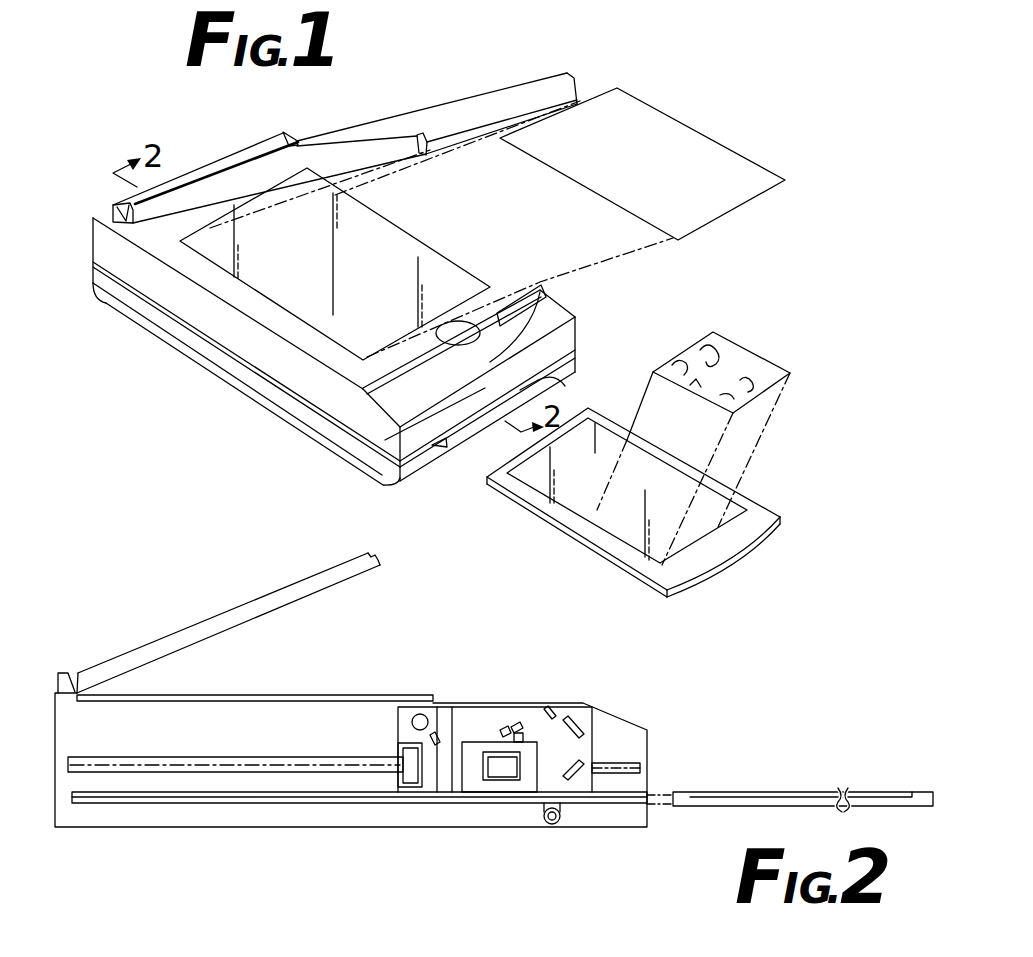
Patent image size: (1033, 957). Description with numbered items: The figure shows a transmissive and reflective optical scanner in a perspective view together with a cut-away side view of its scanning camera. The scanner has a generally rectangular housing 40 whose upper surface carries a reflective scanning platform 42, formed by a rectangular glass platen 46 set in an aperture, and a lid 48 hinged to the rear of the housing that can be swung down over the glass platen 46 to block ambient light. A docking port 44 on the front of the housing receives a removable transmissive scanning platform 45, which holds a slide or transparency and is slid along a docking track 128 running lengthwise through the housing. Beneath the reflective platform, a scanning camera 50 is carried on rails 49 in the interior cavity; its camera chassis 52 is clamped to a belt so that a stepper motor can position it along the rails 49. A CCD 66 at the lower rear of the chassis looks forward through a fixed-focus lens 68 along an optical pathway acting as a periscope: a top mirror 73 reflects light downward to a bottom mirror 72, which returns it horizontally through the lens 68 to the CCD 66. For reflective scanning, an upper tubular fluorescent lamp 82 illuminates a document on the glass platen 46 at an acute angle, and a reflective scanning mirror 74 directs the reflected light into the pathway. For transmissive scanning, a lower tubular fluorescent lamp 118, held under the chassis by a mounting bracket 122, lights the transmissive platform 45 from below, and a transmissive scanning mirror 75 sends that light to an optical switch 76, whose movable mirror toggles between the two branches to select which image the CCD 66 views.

In FIG. 1, the housing 40 is at (392, 489).
In FIG. 2, the housing 40 is at (637, 833).
In FIG. 1, the reflective scanning platform 42 is at (440, 249).
In FIG. 1, the docking port 44 is at (543, 381).
In FIG. 1, the transmissive scanning platform 45 is at (773, 517).
In FIG. 2, the transmissive scanning platform 45 is at (928, 792).
In FIG. 1, the glass platen 46 is at (393, 256).
In FIG. 2, the glass platen 46 is at (377, 695).
In FIG. 1, the lid 48 is at (578, 73).
In FIG. 2, the lid 48 is at (352, 575).
In FIG. 2, the rails 49 is at (628, 763).
In FIG. 2, the scanning camera 50 is at (603, 721).
In FIG. 2, the camera chassis 52 is at (398, 730).
In FIG. 2, the CCD 66 is at (423, 782).
In FIG. 2, the fixed-focus lens 68 is at (523, 777).
In FIG. 2, the bottom mirror 72 is at (576, 778).
In FIG. 2, the top mirror 73 is at (576, 716).
In FIG. 2, the reflective scanning mirror 74 is at (438, 735).
In FIG. 2, the transmissive scanning mirror 75 is at (550, 707).
In FIG. 2, the optical switch 76 is at (521, 712).
In FIG. 2, the upper tubular fluorescent lamp 82 is at (411, 722).
In FIG. 2, the lower tubular fluorescent lamp 118 is at (548, 823).
In FIG. 2, the mounting bracket 122 is at (557, 822).
In FIG. 2, the docking track 128 is at (640, 797).